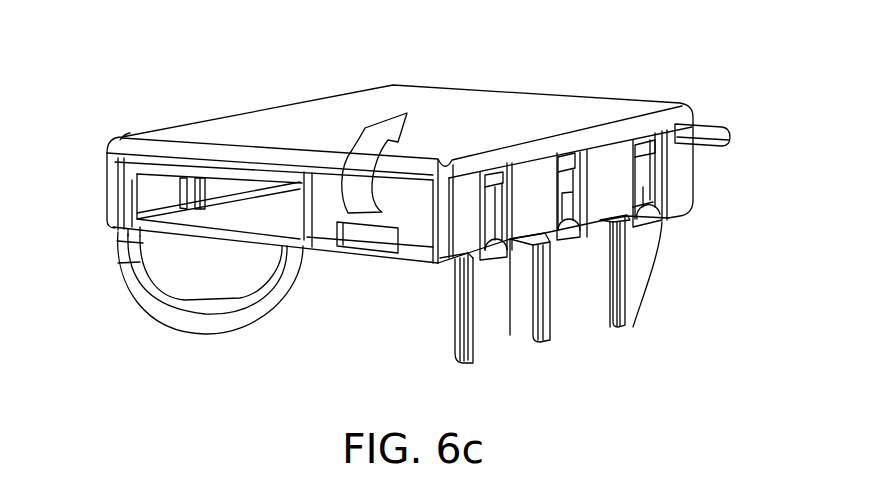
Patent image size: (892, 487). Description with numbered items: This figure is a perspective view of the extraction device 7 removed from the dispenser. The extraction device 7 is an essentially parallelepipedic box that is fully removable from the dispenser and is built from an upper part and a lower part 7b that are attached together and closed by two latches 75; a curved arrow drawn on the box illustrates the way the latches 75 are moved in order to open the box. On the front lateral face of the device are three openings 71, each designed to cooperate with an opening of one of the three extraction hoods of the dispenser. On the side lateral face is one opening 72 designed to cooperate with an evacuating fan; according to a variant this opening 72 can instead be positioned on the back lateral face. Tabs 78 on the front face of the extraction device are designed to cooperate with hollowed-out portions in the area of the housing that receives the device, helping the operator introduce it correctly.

The extraction device 7 is at (614, 80).
The lower part 7b is at (729, 134).
The openings 71 is at (486, 252).
The opening 72 is at (137, 270).
The latches 75 is at (362, 230).
The tabs 78 is at (465, 364).